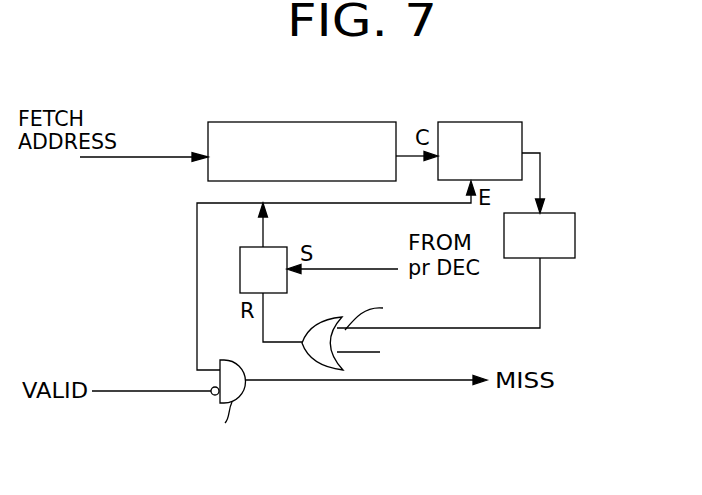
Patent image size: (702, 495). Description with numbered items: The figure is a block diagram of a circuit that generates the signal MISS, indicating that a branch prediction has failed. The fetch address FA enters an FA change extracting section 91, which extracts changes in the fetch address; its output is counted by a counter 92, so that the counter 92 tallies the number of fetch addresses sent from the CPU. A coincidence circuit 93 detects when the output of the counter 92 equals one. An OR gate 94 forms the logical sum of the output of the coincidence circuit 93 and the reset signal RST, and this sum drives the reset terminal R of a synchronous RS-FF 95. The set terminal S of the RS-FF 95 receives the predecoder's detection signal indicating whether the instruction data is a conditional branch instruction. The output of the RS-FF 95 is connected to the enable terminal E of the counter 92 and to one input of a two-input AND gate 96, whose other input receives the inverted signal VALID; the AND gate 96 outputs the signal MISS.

The FA change extracting section 91 is at (220, 123).
The counter 92 is at (503, 121).
The coincidence circuit 93 is at (561, 212).
The OR gate 94 is at (322, 322).
The synchronous RS-FF 95 is at (247, 247).
The two-input AND gate 96 is at (243, 390).